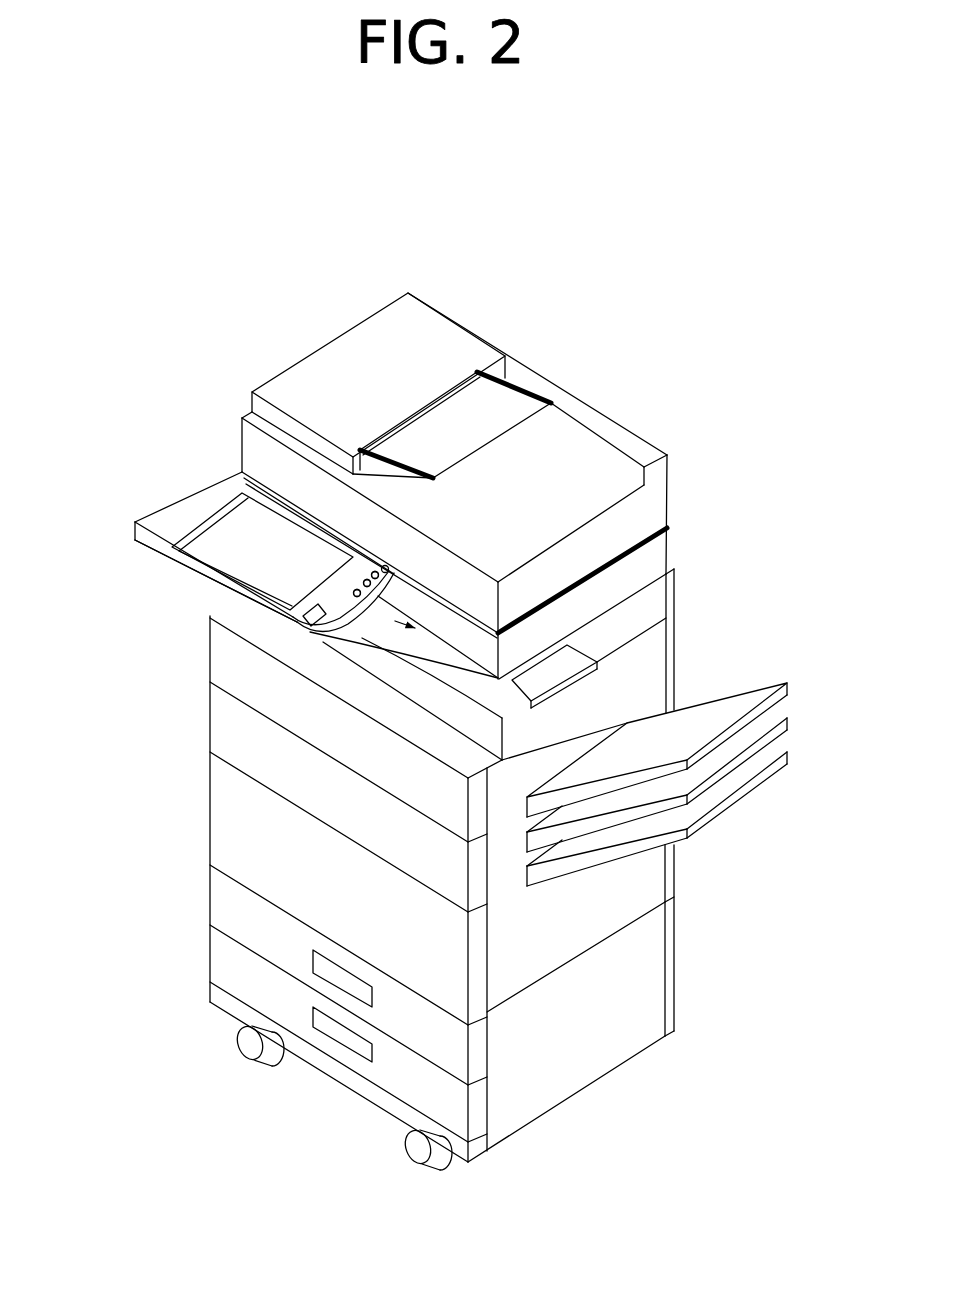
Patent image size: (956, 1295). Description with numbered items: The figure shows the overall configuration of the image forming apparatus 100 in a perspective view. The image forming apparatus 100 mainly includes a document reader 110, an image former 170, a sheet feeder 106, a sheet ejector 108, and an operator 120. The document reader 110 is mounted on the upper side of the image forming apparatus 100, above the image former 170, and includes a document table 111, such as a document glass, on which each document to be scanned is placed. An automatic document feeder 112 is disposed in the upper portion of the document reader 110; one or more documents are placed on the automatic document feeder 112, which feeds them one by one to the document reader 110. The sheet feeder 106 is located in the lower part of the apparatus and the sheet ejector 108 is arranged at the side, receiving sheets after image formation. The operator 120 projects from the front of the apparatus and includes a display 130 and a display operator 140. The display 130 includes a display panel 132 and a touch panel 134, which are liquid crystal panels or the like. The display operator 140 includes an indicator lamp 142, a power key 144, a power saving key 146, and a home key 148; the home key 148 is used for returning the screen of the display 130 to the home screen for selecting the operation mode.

The image forming apparatus 100 is at (656, 322).
The sheet feeder 106 is at (198, 932).
The sheet ejector 108 is at (784, 667).
The document reader 110 is at (680, 492).
The document table 111 is at (607, 575).
The automatic document feeder 112 is at (379, 361).
The operator 120 is at (224, 600).
The display 130 is at (227, 533).
The display panel 132 is at (262, 551).
The touch panel 134 is at (235, 552).
The display operator 140 is at (365, 563).
The indicator lamp 142 is at (396, 570).
The power key 144 is at (380, 587).
The power saving key 146 is at (358, 598).
The home key 148 is at (310, 628).
The image former 170 is at (196, 779).